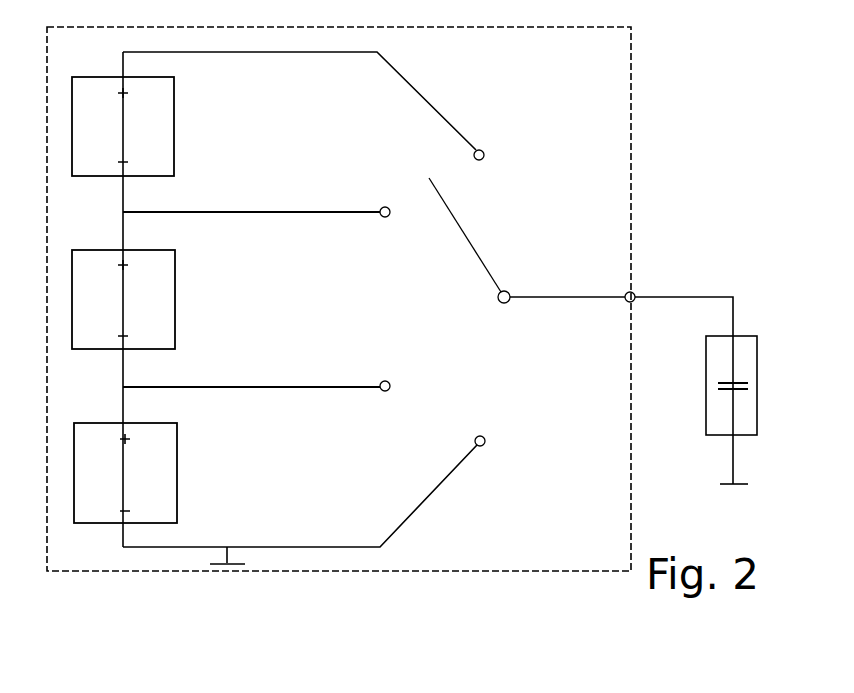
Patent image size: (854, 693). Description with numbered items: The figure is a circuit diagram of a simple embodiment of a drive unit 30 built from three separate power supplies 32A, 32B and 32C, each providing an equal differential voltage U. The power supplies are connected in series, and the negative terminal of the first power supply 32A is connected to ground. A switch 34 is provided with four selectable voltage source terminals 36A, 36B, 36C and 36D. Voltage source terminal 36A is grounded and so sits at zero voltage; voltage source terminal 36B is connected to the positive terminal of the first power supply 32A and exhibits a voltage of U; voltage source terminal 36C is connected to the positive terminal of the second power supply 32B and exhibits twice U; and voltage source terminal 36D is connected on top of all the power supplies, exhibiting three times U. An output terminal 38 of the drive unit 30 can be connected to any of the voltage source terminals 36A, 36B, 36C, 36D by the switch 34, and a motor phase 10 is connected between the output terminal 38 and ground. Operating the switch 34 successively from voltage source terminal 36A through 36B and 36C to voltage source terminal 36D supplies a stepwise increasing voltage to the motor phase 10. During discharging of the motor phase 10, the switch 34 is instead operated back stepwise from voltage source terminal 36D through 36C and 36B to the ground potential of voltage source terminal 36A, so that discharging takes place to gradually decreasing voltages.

The motor phase 10 is at (748, 427).
The drive unit 30 is at (522, 565).
The first power supply 32A is at (170, 470).
The second power supply 32B is at (168, 298).
The third power supply 32C is at (165, 124).
The switch 34 is at (486, 256).
The voltage source terminal 36A is at (482, 447).
The voltage source terminal 36B is at (386, 392).
The voltage source terminal 36C is at (386, 218).
The voltage source terminal 36D is at (483, 160).
The output terminal 38 is at (633, 292).